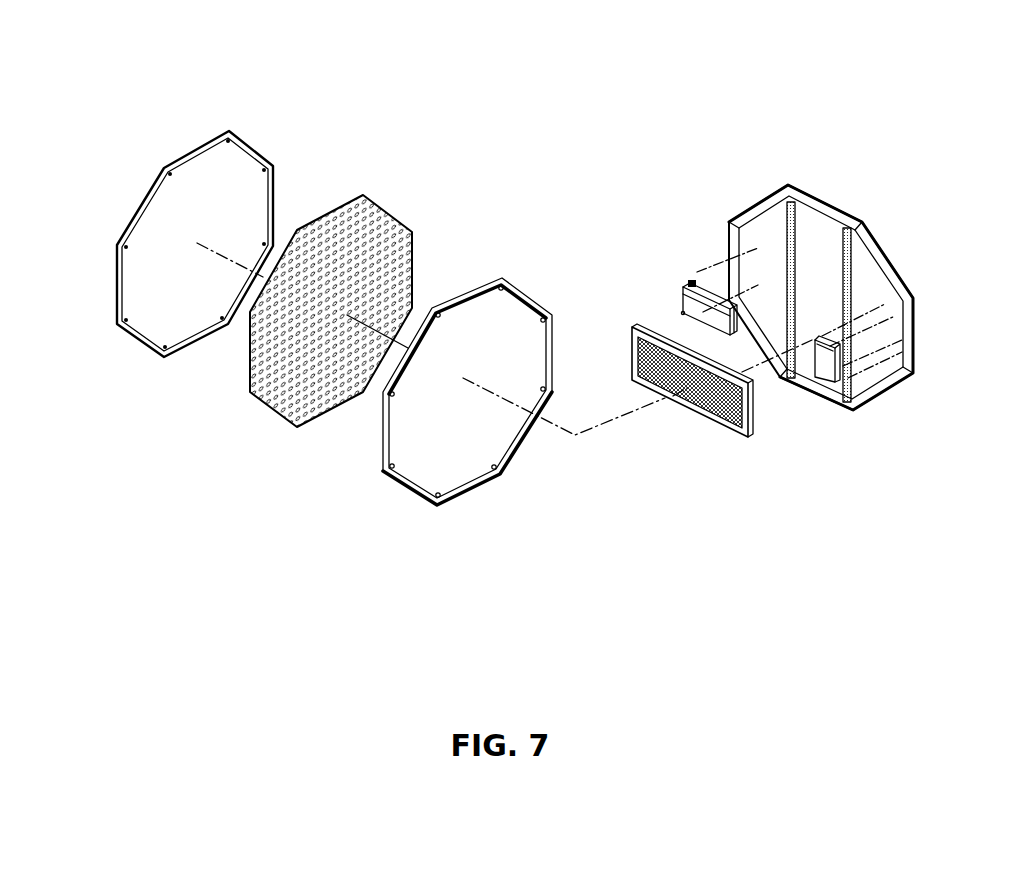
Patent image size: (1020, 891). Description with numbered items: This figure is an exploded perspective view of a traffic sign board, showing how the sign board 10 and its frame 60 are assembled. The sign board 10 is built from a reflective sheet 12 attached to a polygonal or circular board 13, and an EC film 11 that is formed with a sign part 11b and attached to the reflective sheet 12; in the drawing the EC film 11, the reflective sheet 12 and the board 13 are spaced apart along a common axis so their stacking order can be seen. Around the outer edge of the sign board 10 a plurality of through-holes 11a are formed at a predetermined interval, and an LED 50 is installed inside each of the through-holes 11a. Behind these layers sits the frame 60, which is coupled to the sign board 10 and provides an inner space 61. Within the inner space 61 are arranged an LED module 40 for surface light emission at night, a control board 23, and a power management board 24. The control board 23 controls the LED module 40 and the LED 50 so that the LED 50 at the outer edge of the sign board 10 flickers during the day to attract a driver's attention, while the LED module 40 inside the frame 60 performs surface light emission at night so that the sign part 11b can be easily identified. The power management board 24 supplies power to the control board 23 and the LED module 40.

The sign board 10 is at (205, 50).
The EC film 11 is at (197, 173).
The through-holes 11a is at (121, 250).
The sign part 11b is at (172, 230).
The reflective sheet 12 is at (358, 194).
The polygonal or circular board 13 is at (462, 294).
The control board 23 is at (825, 368).
The power management board 24 is at (685, 298).
The LED module 40 is at (692, 412).
The LED 50 is at (390, 473).
The frame 60 is at (815, 203).
The inner space 61 is at (828, 257).